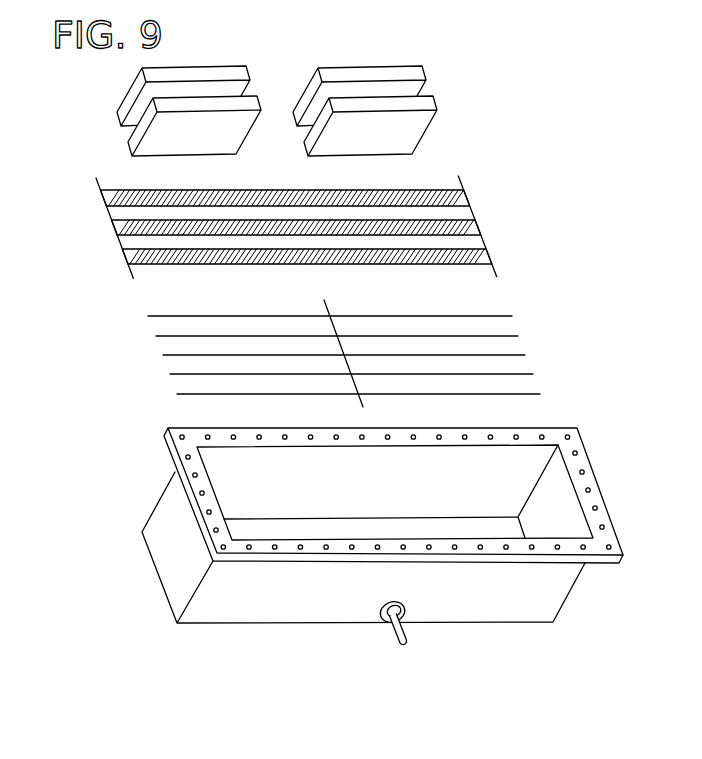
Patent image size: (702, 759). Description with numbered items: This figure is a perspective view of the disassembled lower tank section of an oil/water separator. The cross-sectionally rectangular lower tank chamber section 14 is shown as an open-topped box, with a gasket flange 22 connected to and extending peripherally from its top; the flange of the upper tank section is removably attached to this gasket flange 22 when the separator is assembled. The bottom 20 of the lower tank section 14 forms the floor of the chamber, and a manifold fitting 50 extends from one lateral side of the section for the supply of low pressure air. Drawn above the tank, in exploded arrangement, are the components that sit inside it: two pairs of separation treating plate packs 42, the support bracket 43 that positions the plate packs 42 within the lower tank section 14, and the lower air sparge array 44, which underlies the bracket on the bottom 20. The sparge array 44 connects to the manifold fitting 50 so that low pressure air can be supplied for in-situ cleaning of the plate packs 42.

The lower tank chamber section 14 is at (357, 516).
The bottom 20 is at (280, 525).
The gasket flange 22 is at (172, 432).
The separation treating plate packs 42 is at (437, 130).
The support bracket 43 is at (485, 227).
The lower air sparge array 44 is at (535, 363).
The manifold fitting 50 is at (412, 629).